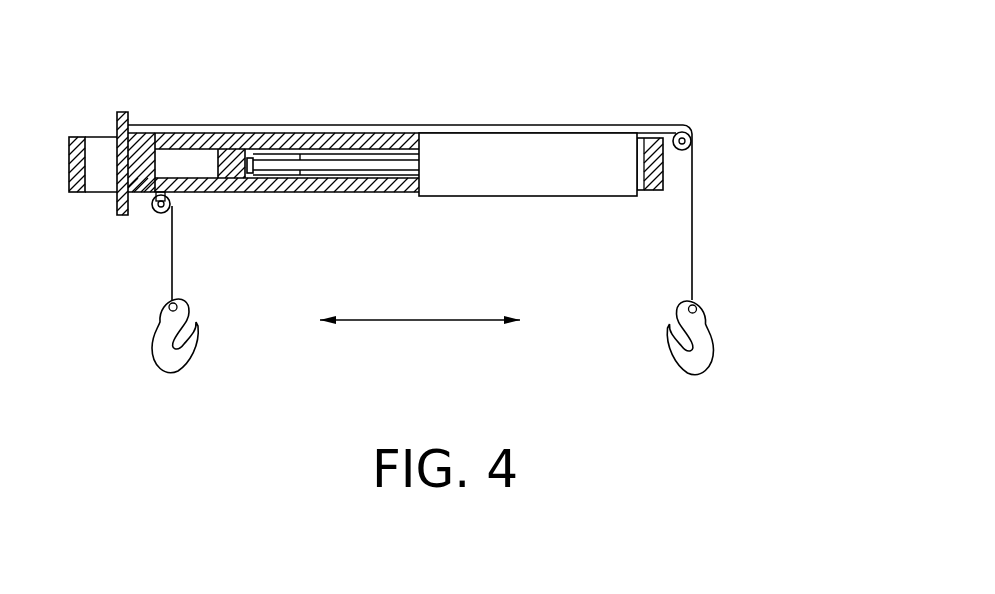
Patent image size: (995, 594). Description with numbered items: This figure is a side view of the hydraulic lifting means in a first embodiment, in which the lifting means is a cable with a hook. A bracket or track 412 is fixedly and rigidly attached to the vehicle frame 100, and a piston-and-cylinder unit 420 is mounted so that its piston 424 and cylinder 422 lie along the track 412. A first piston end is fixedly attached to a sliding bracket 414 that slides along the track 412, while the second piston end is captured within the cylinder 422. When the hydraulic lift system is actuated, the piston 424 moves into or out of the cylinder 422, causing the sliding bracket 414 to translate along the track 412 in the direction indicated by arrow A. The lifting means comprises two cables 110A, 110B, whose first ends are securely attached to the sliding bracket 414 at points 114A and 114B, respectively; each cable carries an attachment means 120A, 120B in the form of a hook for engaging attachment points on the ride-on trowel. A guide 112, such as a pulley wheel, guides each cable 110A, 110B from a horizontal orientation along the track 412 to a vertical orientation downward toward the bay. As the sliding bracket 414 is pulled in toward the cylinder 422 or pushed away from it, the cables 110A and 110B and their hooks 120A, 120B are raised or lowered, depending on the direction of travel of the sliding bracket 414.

The vehicle frame 100 is at (107, 153).
The attachment point 114A is at (131, 123).
The attachment point 114B is at (128, 217).
The track 412 is at (183, 140).
The sliding bracket 414 is at (140, 152).
The piston 424 is at (320, 160).
The piston-and-cylinder unit 420 is at (512, 170).
The cylinder 422 is at (480, 163).
The guide 112 is at (692, 138).
The cable 110A is at (543, 125).
The cable 110B is at (172, 267).
The attachment means 120A is at (695, 358).
The attachment means 120B is at (172, 357).
The arrow A is at (430, 320).